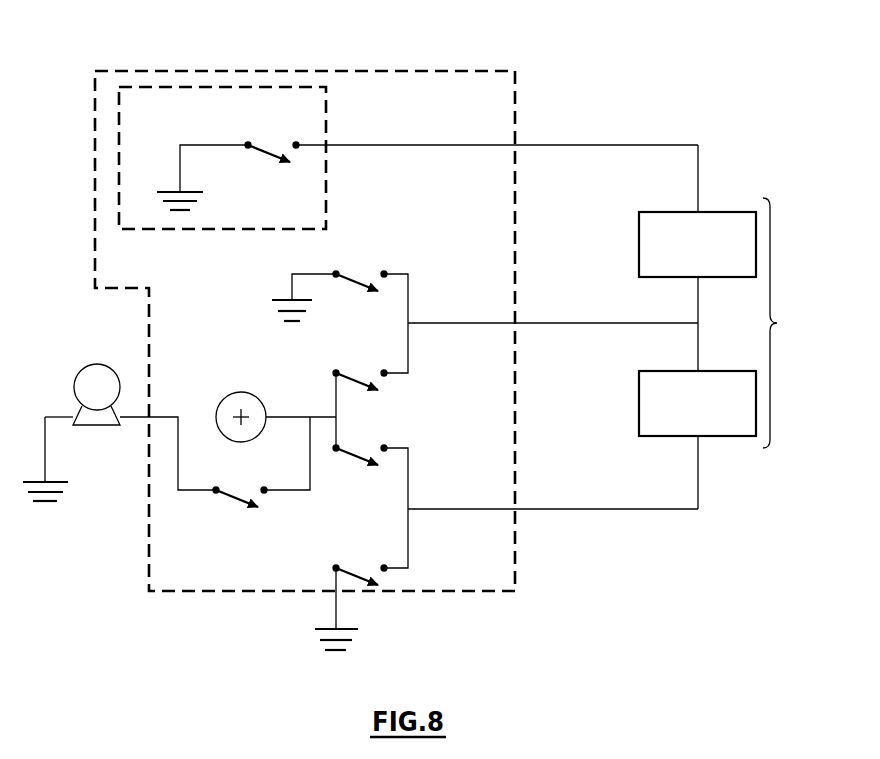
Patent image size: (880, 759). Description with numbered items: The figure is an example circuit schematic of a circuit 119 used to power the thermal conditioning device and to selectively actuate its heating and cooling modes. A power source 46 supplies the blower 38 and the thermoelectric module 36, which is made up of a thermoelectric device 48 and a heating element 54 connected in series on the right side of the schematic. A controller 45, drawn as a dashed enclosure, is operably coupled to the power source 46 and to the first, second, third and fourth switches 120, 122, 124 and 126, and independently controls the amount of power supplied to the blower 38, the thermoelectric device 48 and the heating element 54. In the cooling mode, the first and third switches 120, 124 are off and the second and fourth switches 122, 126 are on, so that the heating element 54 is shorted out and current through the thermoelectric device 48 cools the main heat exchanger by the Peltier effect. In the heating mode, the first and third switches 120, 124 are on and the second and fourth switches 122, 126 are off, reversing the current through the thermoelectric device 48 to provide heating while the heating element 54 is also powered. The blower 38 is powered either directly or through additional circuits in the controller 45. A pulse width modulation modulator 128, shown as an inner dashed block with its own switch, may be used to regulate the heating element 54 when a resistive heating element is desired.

The thermoelectric module 36 is at (787, 323).
The blower 38 is at (83, 368).
The controller 45 is at (509, 68).
The power source 46 is at (255, 398).
The thermoelectric device 48 is at (697, 403).
The heating element 54 is at (697, 244).
The circuit 119 is at (541, 86).
The first switch 120 is at (388, 594).
The second switch 122 is at (390, 441).
The third switch 124 is at (394, 382).
The fourth switch 126 is at (365, 270).
The pulse width modulation modulator 128 is at (236, 84).